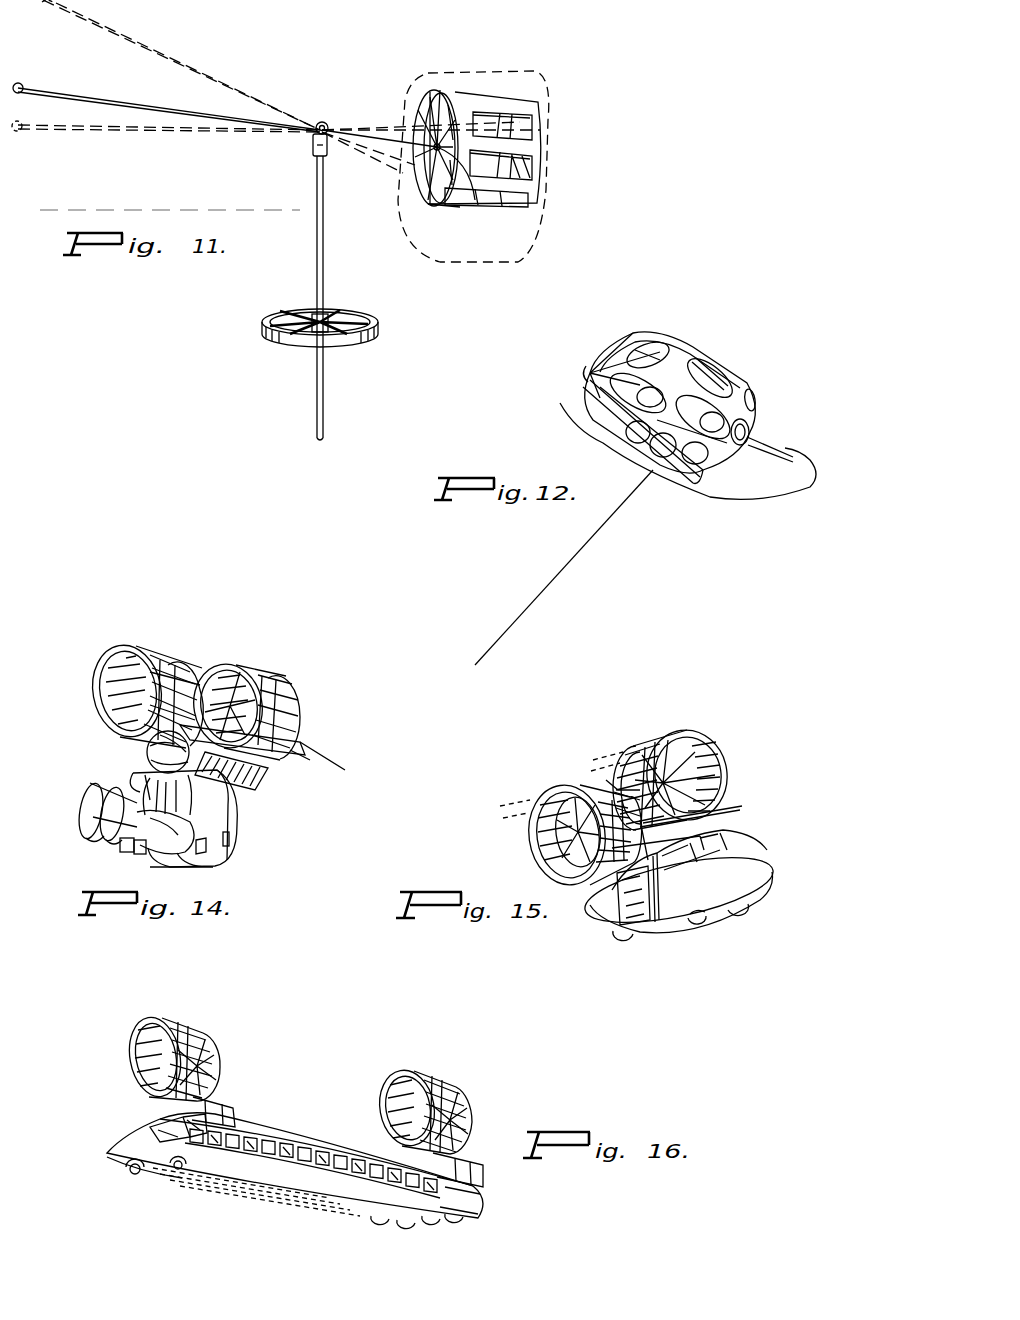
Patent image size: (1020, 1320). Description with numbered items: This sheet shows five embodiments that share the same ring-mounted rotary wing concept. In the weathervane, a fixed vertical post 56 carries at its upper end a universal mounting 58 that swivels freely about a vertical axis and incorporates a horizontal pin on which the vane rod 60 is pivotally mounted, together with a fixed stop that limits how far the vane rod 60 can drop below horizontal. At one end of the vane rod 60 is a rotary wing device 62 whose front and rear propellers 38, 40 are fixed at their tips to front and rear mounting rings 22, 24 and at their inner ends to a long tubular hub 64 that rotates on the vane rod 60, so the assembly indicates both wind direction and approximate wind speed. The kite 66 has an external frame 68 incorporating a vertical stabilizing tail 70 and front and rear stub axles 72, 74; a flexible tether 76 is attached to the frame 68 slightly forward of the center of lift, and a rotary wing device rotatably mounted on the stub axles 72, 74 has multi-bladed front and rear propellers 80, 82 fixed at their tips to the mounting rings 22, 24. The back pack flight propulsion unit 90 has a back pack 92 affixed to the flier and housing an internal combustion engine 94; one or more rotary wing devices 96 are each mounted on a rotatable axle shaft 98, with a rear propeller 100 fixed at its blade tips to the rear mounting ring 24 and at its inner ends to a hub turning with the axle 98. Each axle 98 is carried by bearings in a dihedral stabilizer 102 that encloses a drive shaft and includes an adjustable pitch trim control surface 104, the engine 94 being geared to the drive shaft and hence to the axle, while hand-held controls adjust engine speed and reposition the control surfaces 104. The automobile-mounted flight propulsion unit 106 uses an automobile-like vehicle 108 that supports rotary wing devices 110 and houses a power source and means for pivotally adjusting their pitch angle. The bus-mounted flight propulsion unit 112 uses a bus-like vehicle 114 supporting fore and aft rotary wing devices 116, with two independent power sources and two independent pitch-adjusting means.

In FIG. 11, the front mounting ring 22 is at (447, 207).
In FIG. 12, the front mounting ring 22 is at (640, 453).
In FIG. 11, the rear mounting ring 24 is at (540, 178).
In FIG. 12, the rear mounting ring 24 is at (710, 466).
In FIG. 15, the rear mounting ring 24 is at (622, 770).
In FIG. 16, the rear mounting ring 24 is at (459, 1097).
In FIG. 11, the front propeller 38 is at (432, 152).
In FIG. 11, the rear propeller 40 is at (470, 206).
In FIG. 11, the fixed vertical post 56 is at (325, 258).
In FIG. 11, the universal mounting 58 is at (313, 135).
In FIG. 11, the vane rod 60 is at (55, 90).
In FIG. 11, the rotary wing device 62 is at (482, 131).
In FIG. 11, the long tubular hub 64 is at (531, 135).
In FIG. 12, the kite 66 is at (666, 471).
In FIG. 12, the external frame 68 is at (580, 405).
In FIG. 12, the vertical stabilizing tail 70 is at (760, 478).
In FIG. 12, the front stub axle 72 is at (590, 370).
In FIG. 12, the rear stub axle 74 is at (752, 437).
In FIG. 12, the flexible tether 76 is at (568, 566).
In FIG. 12, the front propeller 80 is at (614, 395).
In FIG. 12, the rear propeller 82 is at (748, 428).
In FIG. 14, the back pack flight propulsion unit 90 is at (224, 724).
In FIG. 14, the back pack 92 is at (240, 808).
In FIG. 14, the internal combustion engine 94 is at (222, 820).
In FIG. 14, the rotary wing device 96 is at (128, 644).
In FIG. 14, the rotatable axle shaft 98 is at (170, 665).
In FIG. 16, the rotatable axle shaft 98 is at (476, 1115).
In FIG. 14, the rear propeller 100 is at (240, 700).
In FIG. 15, the rear propeller 100 is at (626, 772).
In FIG. 16, the rear propeller 100 is at (451, 1100).
In FIG. 14, the dihedral stabilizer 102 is at (248, 772).
In FIG. 15, the dihedral stabilizer 102 is at (712, 820).
In FIG. 16, the dihedral stabilizer 102 is at (470, 1179).
In FIG. 14, the adjustable pitch trim control surface 104 is at (300, 736).
In FIG. 15, the adjustable pitch trim control surface 104 is at (572, 800).
In FIG. 16, the adjustable pitch trim control surface 104 is at (481, 1136).
In FIG. 15, the automobile-mounted flight propulsion unit 106 is at (649, 810).
In FIG. 15, the automobile-like vehicle 108 is at (757, 858).
In FIG. 15, the rotary wing device 110 is at (657, 738).
In FIG. 16, the bus-mounted flight propulsion unit 112 is at (146, 1194).
In FIG. 16, the bus-like vehicle 114 is at (478, 1208).
In FIG. 16, the rotary wing device 116 is at (212, 1026).